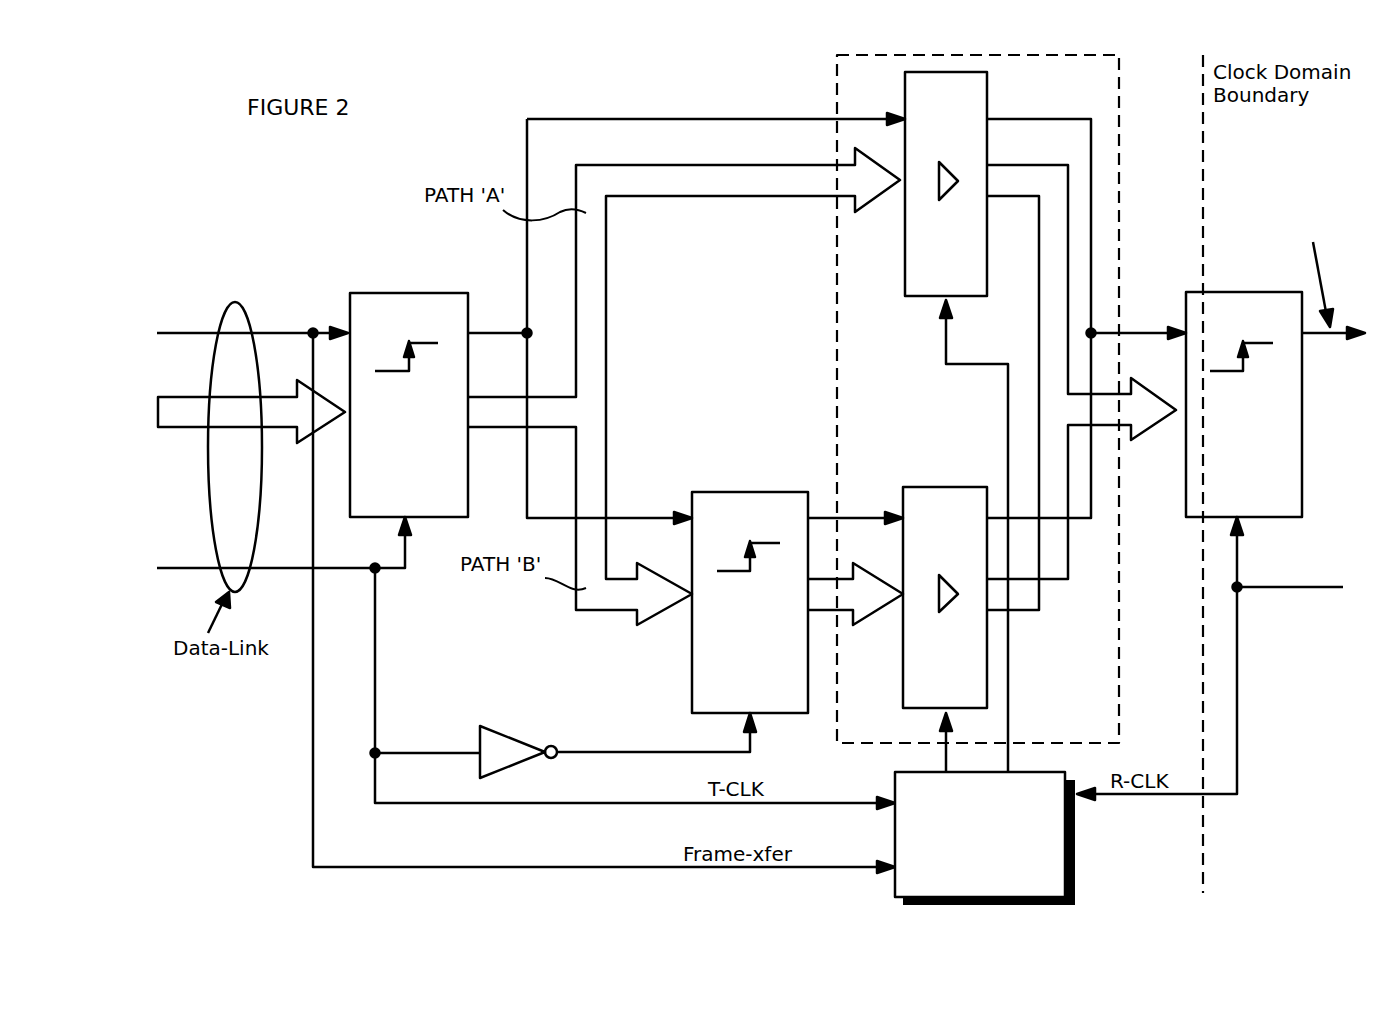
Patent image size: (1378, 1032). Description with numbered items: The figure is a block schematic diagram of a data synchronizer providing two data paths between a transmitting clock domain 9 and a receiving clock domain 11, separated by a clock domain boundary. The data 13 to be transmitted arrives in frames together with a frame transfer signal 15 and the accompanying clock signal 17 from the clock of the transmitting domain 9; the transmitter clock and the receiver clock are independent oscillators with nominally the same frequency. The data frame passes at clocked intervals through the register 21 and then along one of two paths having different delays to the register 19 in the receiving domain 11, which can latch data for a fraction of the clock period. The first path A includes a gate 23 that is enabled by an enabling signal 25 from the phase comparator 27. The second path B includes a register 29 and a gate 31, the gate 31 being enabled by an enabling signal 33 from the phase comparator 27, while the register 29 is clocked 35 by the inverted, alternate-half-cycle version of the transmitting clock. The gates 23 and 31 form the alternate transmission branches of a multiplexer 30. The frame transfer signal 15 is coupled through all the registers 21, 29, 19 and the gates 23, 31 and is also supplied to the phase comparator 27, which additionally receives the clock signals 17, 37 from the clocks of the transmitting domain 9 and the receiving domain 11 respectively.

The transmitting clock domain 9 is at (1174, 175).
The receiving clock domain 11 is at (1249, 175).
The data 13 is at (192, 428).
The frame transfer signal 15 is at (236, 338).
The clock signal 17 is at (177, 572).
The register 19 is at (1222, 292).
The register 21 is at (400, 293).
The gate 23 is at (905, 258).
The enabling signal 25 is at (966, 367).
The phase comparator 27 is at (1072, 845).
The register 29 is at (746, 492).
The multiplexer 30 is at (837, 73).
The gate 31 is at (932, 487).
The enabling signal 33 is at (945, 760).
The inverted clock 35 is at (650, 752).
The clock signal 37 is at (1240, 590).